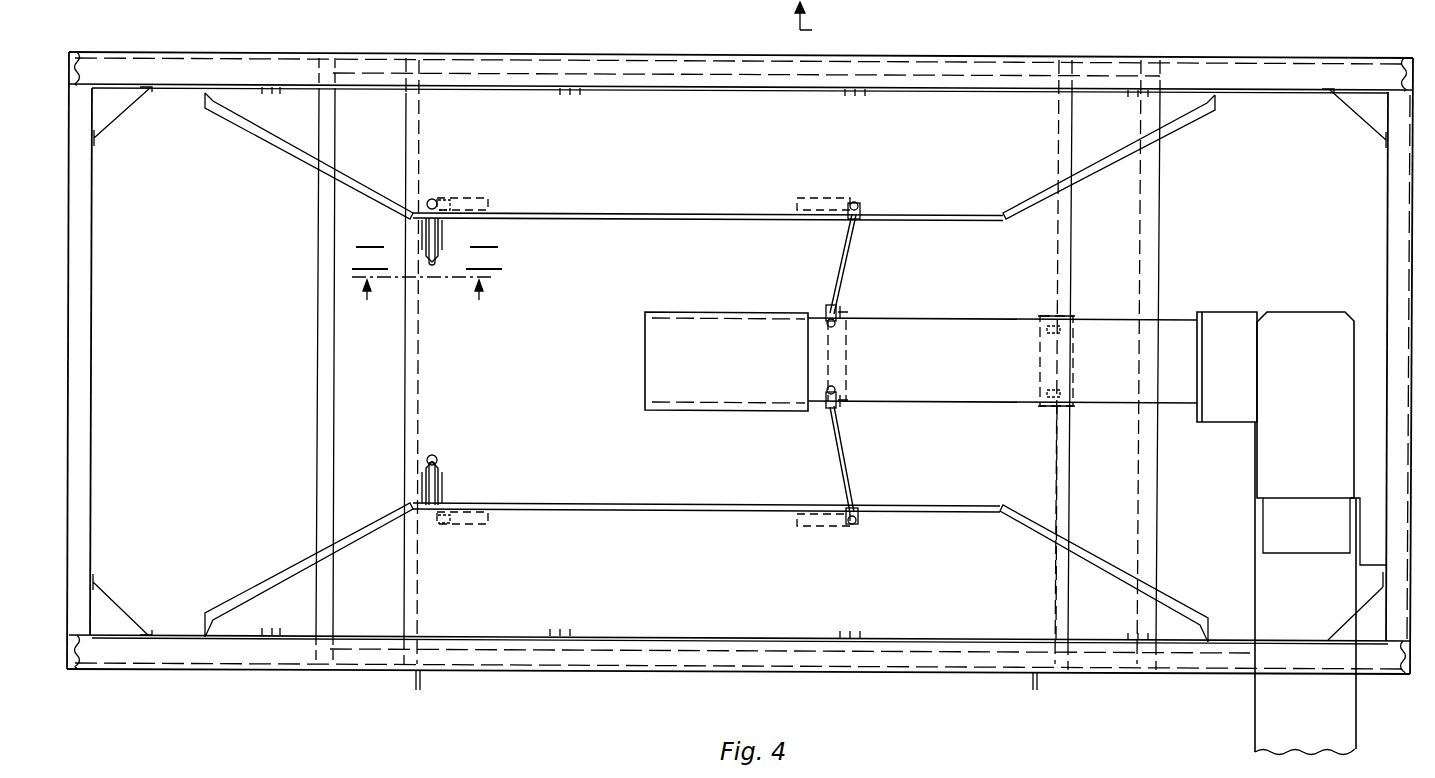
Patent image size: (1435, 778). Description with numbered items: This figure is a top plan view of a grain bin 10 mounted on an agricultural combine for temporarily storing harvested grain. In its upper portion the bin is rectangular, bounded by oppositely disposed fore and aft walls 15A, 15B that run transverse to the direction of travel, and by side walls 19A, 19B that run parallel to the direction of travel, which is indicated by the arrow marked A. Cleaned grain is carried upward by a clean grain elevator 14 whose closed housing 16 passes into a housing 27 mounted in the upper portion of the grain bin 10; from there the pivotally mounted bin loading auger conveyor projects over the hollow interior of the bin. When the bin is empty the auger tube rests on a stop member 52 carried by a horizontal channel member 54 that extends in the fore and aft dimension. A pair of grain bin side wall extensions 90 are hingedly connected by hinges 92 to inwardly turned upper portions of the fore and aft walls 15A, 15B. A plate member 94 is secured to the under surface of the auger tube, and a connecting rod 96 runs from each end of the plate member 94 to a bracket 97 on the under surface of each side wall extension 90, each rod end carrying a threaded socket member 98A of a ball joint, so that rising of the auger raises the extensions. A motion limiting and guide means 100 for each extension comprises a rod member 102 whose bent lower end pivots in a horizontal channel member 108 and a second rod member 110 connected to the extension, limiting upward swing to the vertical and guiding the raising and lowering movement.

The grain bin 10 is at (521, 681).
The clean grain elevator 14 is at (1250, 705).
The fore wall 15A is at (552, 41).
The aft wall 15B is at (595, 673).
The housing 16 is at (1357, 716).
The side wall 19A is at (67, 457).
The side wall 19B is at (1412, 234).
The housing 27 is at (1298, 304).
The stop member 52 is at (1048, 406).
The horizontal channel member 54 is at (1058, 480).
The grain bin side wall extension 90 is at (626, 223).
The hinge 92 is at (270, 94).
The plate member 94 is at (850, 358).
The connecting rod 96 is at (845, 254).
The bracket 97 is at (455, 195).
The socket member 98A is at (862, 204).
The motion limiting and guide means 100 is at (452, 232).
The rod member 102 is at (425, 231).
The horizontal channel member 108 is at (411, 381).
The second rod member 110 is at (442, 205).